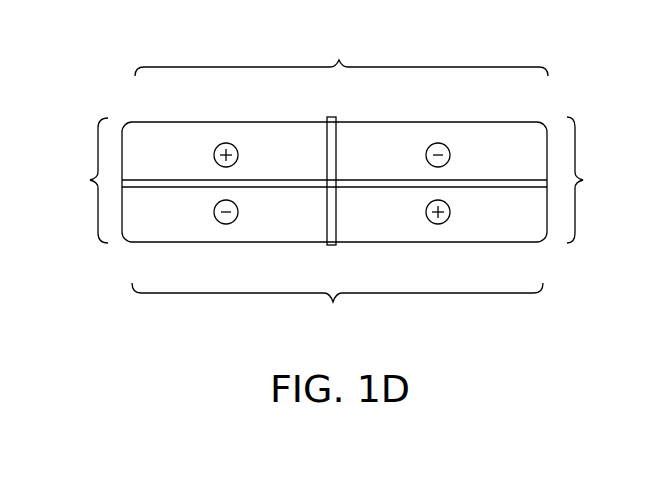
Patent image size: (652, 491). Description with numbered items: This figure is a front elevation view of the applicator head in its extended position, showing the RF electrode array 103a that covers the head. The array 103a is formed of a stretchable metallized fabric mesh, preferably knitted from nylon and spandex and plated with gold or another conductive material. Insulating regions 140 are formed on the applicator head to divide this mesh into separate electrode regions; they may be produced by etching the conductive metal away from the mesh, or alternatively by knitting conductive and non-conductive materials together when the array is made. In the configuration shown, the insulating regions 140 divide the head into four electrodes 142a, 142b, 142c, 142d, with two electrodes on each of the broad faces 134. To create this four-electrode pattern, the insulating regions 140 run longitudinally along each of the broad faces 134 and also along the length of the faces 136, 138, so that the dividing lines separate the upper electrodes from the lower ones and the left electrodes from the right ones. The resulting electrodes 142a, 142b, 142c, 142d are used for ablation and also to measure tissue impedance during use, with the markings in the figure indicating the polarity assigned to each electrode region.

The RF electrode array 103a is at (135, 121).
The broad faces 134 is at (340, 184).
The face 136 is at (336, 180).
The face 138 is at (406, 163).
The insulating regions 140 is at (284, 178).
The electrode 142a is at (492, 150).
The electrode 142b is at (181, 133).
The electrode 142c is at (170, 212).
The electrode 142d is at (507, 212).